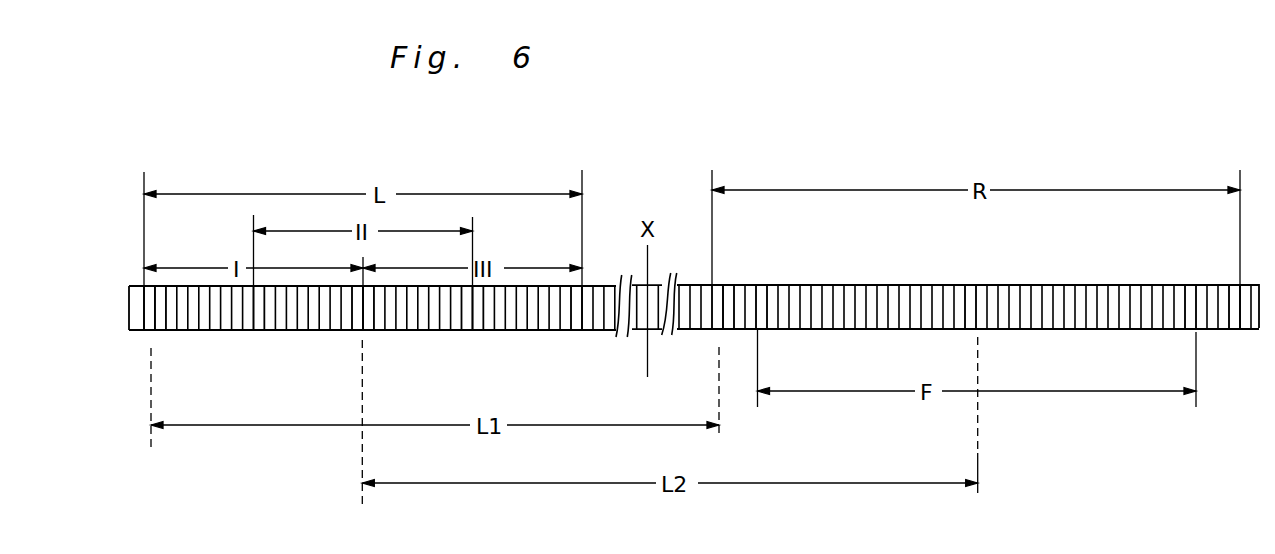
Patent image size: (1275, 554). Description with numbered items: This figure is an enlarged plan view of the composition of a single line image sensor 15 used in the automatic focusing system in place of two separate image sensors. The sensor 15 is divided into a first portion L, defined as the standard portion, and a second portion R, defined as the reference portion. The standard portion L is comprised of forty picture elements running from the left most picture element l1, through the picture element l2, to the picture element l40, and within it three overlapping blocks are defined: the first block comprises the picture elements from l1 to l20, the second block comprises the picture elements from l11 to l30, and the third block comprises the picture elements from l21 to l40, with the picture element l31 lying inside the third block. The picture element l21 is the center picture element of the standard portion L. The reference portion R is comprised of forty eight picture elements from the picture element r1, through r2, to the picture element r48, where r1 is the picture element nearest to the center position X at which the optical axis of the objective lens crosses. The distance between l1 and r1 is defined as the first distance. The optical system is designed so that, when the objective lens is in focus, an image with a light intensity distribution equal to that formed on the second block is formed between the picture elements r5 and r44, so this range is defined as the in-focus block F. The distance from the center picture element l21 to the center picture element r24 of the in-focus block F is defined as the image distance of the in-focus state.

The single line image sensor 15 is at (140, 315).
The left most picture element of the standard portion l1 is at (148, 318).
The picture element of the standard portion l2 is at (160, 318).
The picture element of the standard portion l11 is at (259, 318).
The picture element of the standard portion l20 is at (357, 318).
The center picture element of the standard portion l21 is at (368, 318).
The picture element of the standard portion l30 is at (465, 318).
The picture element of the standard portion l31 is at (477, 318).
The picture element of the standard portion l40 is at (575, 318).
The picture element of the reference portion nearest the crossing position r1 is at (718, 317).
The picture element of the reference portion r2 is at (730, 320).
The picture element of the reference portion r5 is at (762, 320).
The center picture element of the in-focus block r24 is at (970, 320).
The picture element of the reference portion r44 is at (1190, 317).
The picture element of the reference portion r48 is at (1235, 318).